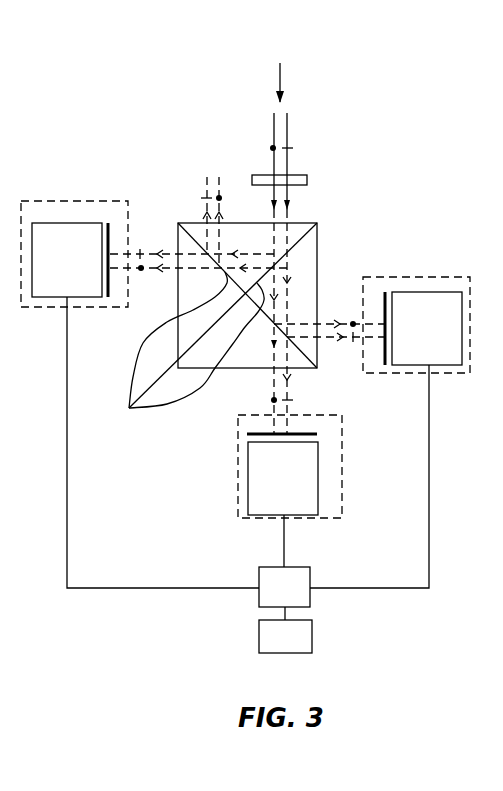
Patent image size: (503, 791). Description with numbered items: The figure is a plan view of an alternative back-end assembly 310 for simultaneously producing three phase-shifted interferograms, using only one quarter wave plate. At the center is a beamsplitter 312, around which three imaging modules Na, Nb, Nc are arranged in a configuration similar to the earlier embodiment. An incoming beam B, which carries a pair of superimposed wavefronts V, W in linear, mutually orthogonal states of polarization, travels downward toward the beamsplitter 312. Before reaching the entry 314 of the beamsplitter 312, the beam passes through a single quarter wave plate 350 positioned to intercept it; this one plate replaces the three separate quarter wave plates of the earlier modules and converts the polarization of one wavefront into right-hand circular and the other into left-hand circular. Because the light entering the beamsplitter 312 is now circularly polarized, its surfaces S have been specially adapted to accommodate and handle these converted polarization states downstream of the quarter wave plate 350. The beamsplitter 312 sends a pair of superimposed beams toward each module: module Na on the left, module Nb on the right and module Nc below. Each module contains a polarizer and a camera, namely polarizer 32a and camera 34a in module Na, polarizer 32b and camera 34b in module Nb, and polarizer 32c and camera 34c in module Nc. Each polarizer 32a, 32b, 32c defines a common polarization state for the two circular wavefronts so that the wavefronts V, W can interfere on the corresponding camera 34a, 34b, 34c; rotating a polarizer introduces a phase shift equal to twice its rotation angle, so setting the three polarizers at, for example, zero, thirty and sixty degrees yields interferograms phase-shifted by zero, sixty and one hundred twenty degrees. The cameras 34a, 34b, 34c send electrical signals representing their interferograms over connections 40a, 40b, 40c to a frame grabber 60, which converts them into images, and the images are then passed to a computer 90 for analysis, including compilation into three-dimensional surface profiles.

The assembly 310 is at (77, 102).
The quarter wave plate 350 is at (308, 174).
The beamsplitter 312 is at (320, 245).
The entry 314 is at (298, 219).
The camera 34a is at (53, 222).
The polarizer 32a is at (107, 222).
The camera 34b is at (440, 287).
The polarizer 32b is at (392, 289).
The camera 34c is at (322, 500).
The polarizer 32c is at (320, 436).
The connection 40a is at (163, 442).
The connection 40b is at (369, 476).
The connection 40c is at (269, 541).
The frame grabber 60 is at (256, 598).
The computer 90 is at (256, 646).
The beam B is at (279, 73).
The wavefront V is at (270, 127).
The wavefront W is at (289, 126).
The surfaces S is at (214, 326).
The module Na is at (53, 310).
The module Nb is at (440, 376).
The module Nc is at (240, 459).